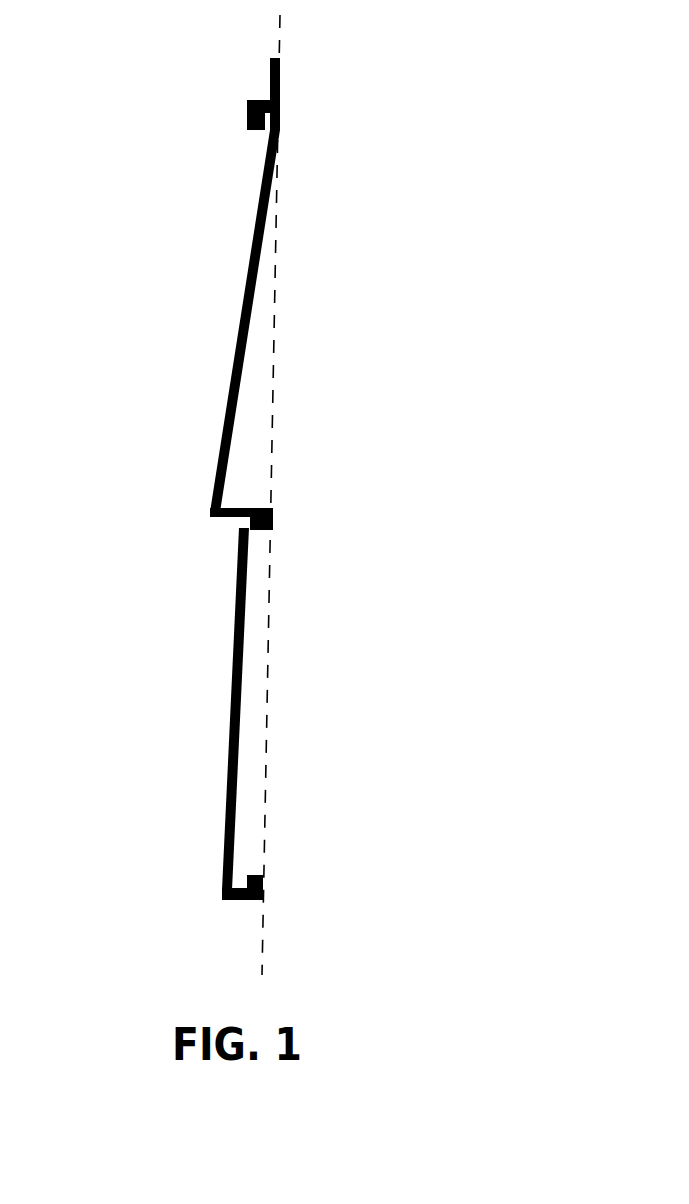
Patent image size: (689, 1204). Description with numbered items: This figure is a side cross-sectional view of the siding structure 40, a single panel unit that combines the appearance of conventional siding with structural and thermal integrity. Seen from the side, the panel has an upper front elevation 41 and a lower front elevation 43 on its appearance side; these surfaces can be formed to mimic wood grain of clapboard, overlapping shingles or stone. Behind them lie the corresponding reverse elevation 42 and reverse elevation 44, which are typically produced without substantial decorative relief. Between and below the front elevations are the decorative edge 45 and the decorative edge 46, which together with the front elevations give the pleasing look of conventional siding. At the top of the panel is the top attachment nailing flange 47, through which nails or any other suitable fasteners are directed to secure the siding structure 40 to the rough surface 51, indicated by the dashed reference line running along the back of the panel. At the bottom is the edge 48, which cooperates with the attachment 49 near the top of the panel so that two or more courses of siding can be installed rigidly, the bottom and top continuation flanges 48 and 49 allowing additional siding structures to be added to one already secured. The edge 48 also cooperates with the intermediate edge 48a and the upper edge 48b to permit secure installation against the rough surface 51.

The siding structure 40 is at (108, 157).
The front elevation 41 is at (225, 418).
The reverse elevation 42 is at (225, 468).
The front elevation 43 is at (216, 712).
The reverse elevation 44 is at (240, 830).
The decorative edge 45 is at (210, 517).
The decorative edge 46 is at (222, 900).
The top attachment nailing flange 47 is at (279, 57).
The edge 48 is at (263, 890).
The edge 48a is at (273, 522).
The edge 48b is at (280, 117).
The attachment 49 is at (257, 100).
The rough surface 51 is at (275, 295).